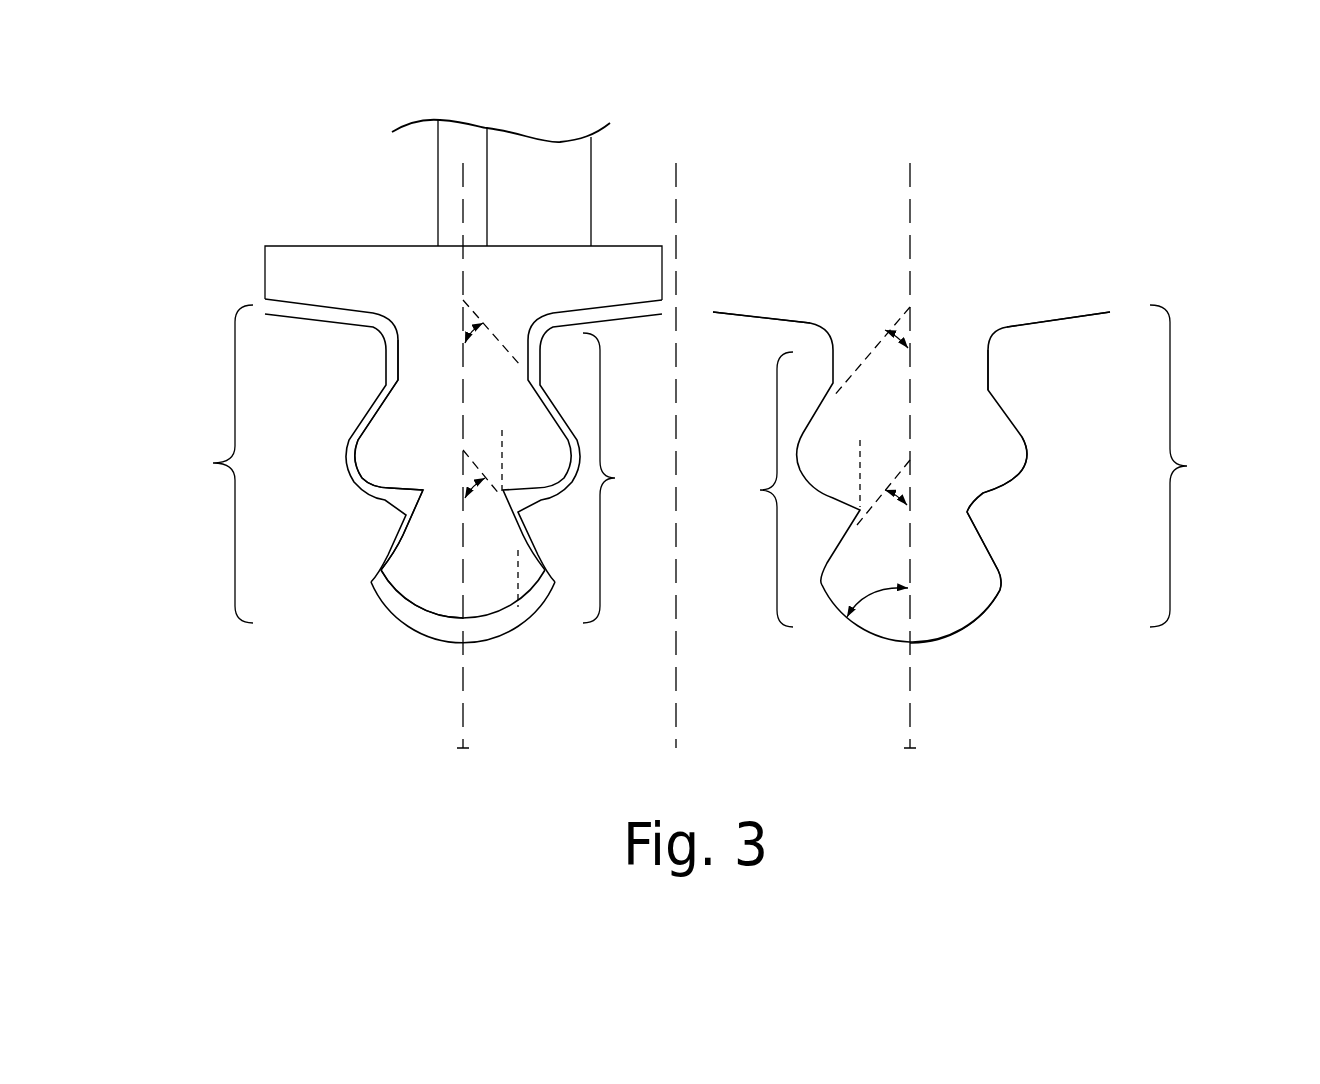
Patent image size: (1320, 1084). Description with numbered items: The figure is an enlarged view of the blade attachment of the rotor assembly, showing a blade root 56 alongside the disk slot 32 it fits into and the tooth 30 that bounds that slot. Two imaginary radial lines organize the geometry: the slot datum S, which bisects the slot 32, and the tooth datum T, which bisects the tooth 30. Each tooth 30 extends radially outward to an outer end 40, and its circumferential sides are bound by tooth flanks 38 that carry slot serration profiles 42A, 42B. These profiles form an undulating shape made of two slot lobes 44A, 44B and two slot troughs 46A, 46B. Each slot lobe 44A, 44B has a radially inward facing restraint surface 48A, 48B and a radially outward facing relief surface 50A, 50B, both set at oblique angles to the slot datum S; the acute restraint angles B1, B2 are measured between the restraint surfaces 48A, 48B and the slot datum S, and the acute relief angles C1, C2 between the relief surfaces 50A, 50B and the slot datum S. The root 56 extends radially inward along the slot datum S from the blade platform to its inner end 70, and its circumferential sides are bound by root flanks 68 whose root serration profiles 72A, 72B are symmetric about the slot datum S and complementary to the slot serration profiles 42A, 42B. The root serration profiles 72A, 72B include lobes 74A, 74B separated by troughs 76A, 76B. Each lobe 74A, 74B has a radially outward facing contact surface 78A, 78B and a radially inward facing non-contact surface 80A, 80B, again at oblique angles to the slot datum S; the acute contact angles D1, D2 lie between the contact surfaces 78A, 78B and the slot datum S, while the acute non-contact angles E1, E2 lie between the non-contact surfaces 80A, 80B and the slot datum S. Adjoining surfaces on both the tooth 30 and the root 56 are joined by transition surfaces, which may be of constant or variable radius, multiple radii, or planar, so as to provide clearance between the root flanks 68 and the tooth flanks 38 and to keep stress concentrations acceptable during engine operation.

The tooth 30 is at (707, 650).
The slot 32 is at (958, 268).
The tooth flank 38 is at (993, 437).
The outer end 40 is at (755, 318).
The slot serration profile 42A is at (784, 469).
The slot serration profile 42B is at (1122, 466).
The slot lobe 44A is at (970, 513).
The slot lobe 44B is at (992, 345).
The slot trough 46A is at (1003, 595).
The slot trough 46B is at (1027, 455).
The restraint surface 48A is at (968, 538).
The restraint surface 48B is at (987, 383).
The relief surface 50A is at (960, 625).
The relief surface 50B is at (990, 495).
The root 56 is at (393, 283).
The root flank 68 is at (393, 503).
The inner end 70 is at (493, 618).
The root serration profile 72A is at (270, 461).
The root serration profile 72B is at (586, 461).
The lobe 74A is at (388, 593).
The lobe 74B is at (360, 463).
The trough 76A is at (421, 493).
The trough 76B is at (397, 352).
The contact surface 78A is at (393, 555).
The contact surface 78B is at (378, 413).
The non-contact surface 80A is at (420, 597).
The non-contact surface 80B is at (388, 482).
The slot datum S is at (460, 740).
The tooth datum T is at (673, 713).
The restraint angle B1 is at (893, 507).
The restraint angle B2 is at (892, 343).
The relief angle C1 is at (867, 597).
The relief angle C2 is at (857, 477).
The contact angle D1 is at (478, 492).
The contact angle D2 is at (477, 338).
The non-contact angle E1 is at (520, 578).
The non-contact angle E2 is at (523, 482).